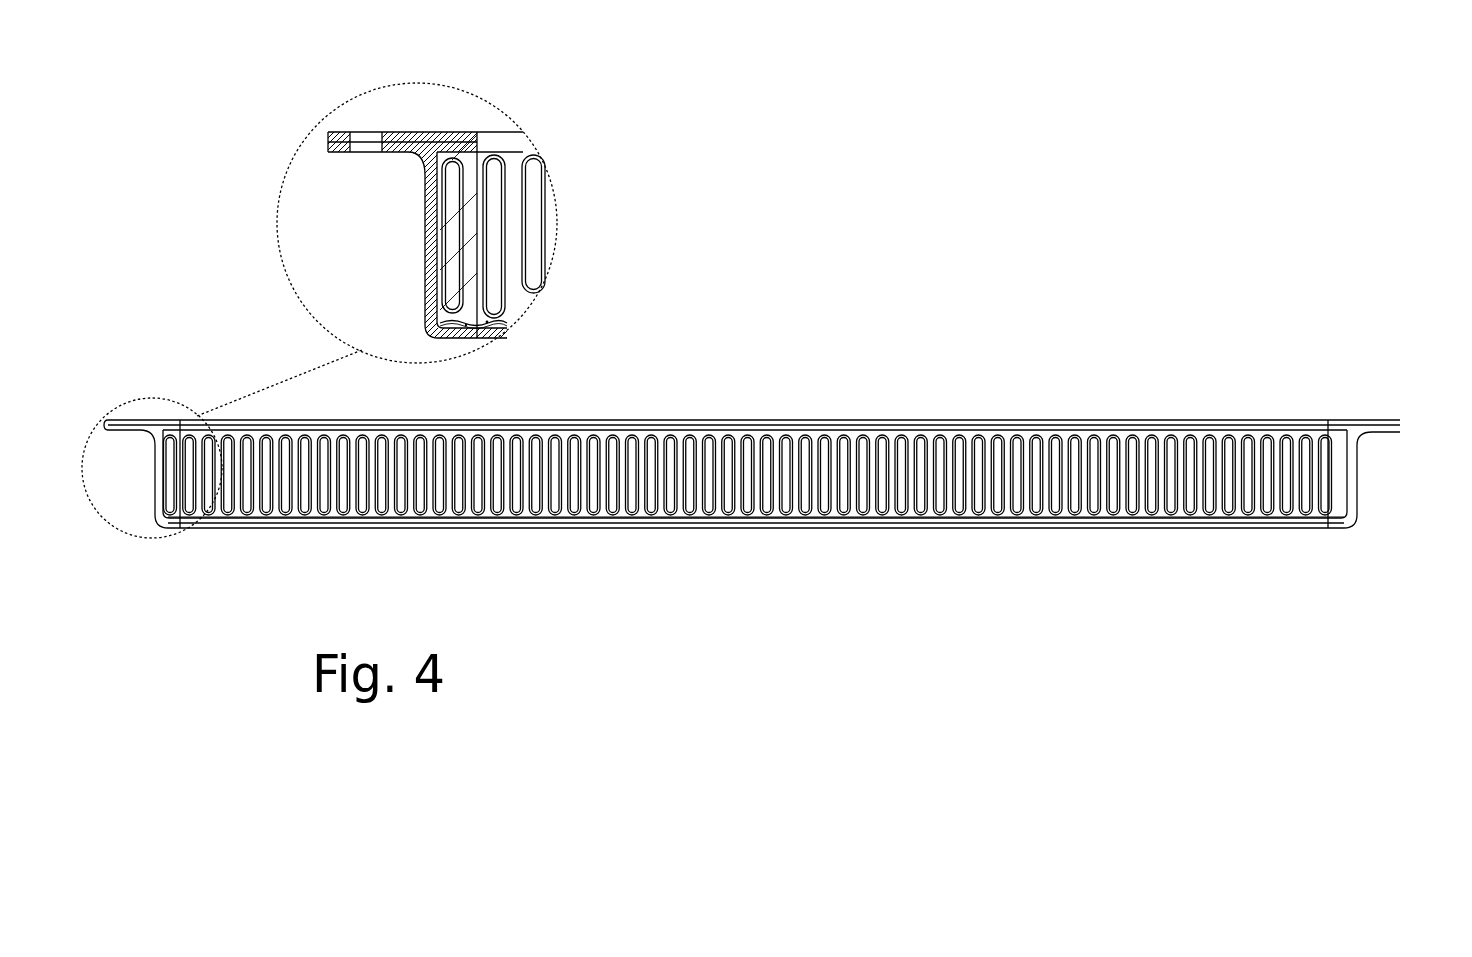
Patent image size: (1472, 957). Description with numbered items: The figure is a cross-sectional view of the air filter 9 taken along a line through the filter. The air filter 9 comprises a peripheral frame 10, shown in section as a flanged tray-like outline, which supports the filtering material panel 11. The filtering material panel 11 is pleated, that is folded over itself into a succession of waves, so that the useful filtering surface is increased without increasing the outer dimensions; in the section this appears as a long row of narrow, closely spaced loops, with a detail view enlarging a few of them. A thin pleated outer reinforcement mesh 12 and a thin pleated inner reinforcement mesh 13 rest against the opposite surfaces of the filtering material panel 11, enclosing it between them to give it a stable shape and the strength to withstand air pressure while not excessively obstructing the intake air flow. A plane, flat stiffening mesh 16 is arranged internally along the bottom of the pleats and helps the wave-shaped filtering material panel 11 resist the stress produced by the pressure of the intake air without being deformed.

The air filter 9 is at (770, 414).
The peripheral frame 10 is at (388, 238).
The filtering material panel 11 is at (555, 225).
The outer reinforcement mesh 12 is at (528, 156).
The inner reinforcement mesh 13 is at (522, 298).
The stiffening mesh 16 is at (485, 330).